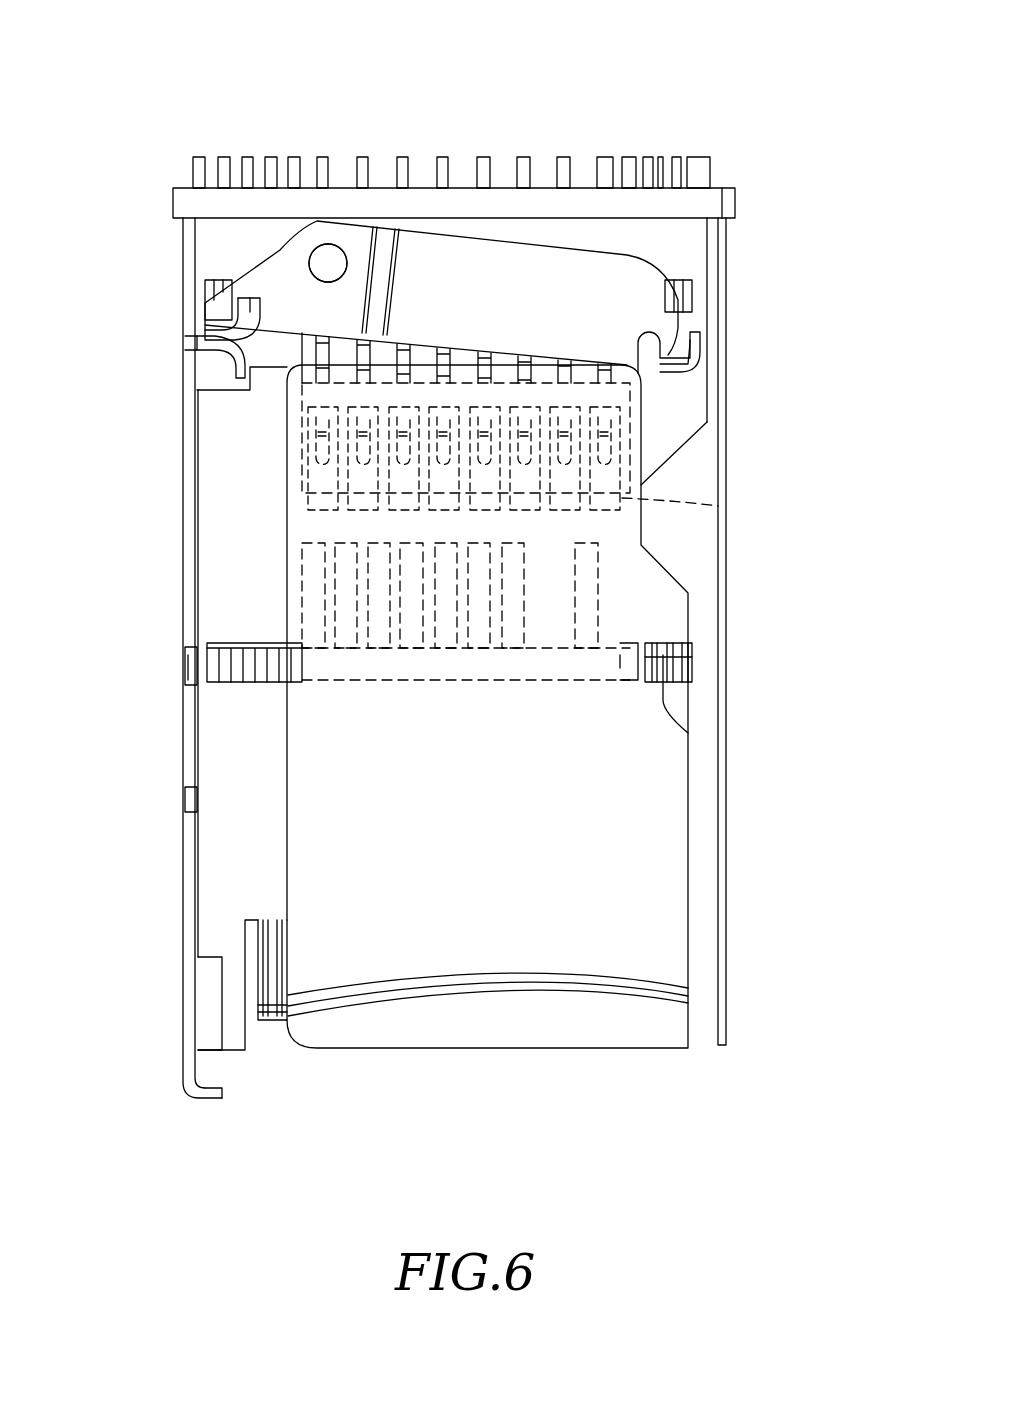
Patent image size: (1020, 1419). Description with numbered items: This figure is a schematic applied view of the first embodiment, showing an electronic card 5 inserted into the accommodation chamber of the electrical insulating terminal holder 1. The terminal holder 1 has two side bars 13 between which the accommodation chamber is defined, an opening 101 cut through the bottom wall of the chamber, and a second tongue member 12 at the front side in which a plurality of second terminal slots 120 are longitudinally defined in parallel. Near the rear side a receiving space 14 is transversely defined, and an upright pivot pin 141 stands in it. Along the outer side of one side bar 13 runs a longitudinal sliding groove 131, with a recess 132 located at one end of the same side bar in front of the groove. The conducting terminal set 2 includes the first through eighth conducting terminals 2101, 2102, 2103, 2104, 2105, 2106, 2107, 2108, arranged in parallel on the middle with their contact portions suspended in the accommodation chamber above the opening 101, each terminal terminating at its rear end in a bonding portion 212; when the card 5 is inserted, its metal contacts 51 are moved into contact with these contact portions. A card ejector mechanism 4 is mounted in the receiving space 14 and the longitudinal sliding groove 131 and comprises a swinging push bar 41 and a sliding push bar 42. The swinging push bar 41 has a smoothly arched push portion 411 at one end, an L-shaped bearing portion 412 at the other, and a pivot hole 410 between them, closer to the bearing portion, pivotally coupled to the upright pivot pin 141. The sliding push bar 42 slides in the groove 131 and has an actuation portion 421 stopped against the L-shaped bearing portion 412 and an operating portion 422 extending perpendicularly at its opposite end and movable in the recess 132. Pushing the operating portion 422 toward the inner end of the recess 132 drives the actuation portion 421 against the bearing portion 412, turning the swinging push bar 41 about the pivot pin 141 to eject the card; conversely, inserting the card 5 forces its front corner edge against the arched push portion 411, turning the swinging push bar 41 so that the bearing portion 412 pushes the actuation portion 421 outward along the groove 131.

The electrical insulating terminal holder 1 is at (703, 760).
The conducting terminal set 2 is at (704, 104).
The card ejector mechanism 4 is at (468, 104).
The electronic card 5 is at (650, 578).
The second tongue member 12 is at (262, 1020).
The side bar 13 is at (242, 1016).
The receiving space 14 is at (666, 248).
The swinging push bar 41 is at (463, 258).
The sliding push bar 42 is at (185, 412).
The metal contact 51 is at (718, 506).
The opening 101 is at (666, 422).
The second terminal slot 120 is at (268, 1020).
The longitudinal sliding groove 131 is at (197, 752).
The recess 132 is at (212, 984).
The upright pivot pin 141 is at (326, 254).
The bonding portion 212 is at (700, 160).
The pivot hole 410 is at (312, 254).
The smoothly arched push portion 411 is at (668, 372).
The L-shaped bearing portion 412 is at (205, 346).
The actuation portion 421 is at (230, 336).
The operating portion 422 is at (208, 1100).
The first conducting terminal 2101 is at (330, 468).
The second conducting terminal 2102 is at (372, 470).
The third conducting terminal 2103 is at (412, 475).
The fourth conducting terminal 2104 is at (452, 480).
The fifth conducting terminal 2105 is at (492, 485).
The sixth conducting terminal 2106 is at (532, 490).
The seventh conducting terminal 2107 is at (572, 495).
The eighth conducting terminal 2108 is at (612, 500).